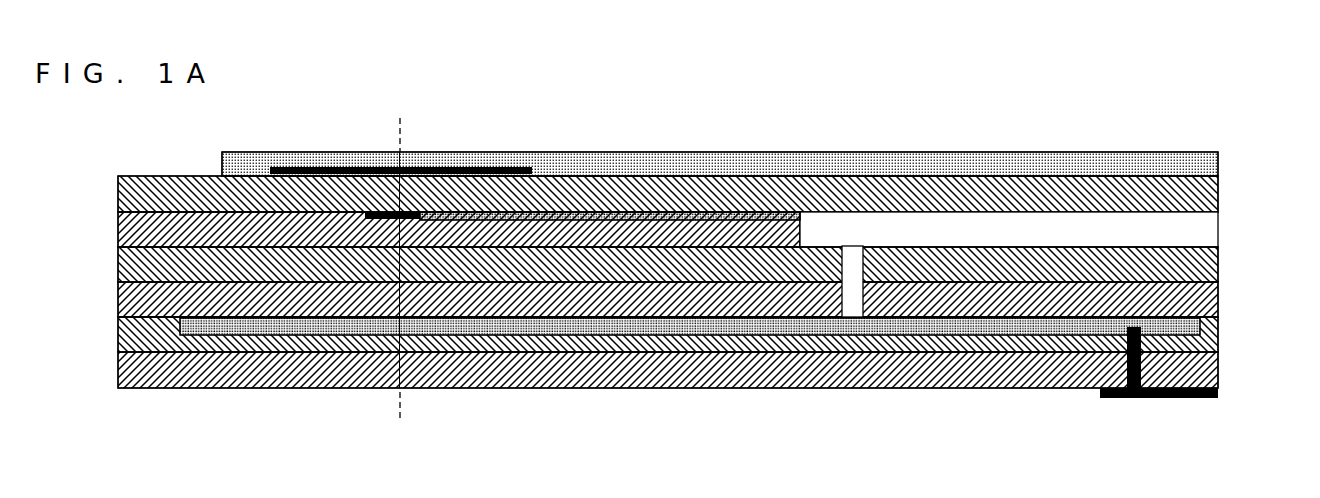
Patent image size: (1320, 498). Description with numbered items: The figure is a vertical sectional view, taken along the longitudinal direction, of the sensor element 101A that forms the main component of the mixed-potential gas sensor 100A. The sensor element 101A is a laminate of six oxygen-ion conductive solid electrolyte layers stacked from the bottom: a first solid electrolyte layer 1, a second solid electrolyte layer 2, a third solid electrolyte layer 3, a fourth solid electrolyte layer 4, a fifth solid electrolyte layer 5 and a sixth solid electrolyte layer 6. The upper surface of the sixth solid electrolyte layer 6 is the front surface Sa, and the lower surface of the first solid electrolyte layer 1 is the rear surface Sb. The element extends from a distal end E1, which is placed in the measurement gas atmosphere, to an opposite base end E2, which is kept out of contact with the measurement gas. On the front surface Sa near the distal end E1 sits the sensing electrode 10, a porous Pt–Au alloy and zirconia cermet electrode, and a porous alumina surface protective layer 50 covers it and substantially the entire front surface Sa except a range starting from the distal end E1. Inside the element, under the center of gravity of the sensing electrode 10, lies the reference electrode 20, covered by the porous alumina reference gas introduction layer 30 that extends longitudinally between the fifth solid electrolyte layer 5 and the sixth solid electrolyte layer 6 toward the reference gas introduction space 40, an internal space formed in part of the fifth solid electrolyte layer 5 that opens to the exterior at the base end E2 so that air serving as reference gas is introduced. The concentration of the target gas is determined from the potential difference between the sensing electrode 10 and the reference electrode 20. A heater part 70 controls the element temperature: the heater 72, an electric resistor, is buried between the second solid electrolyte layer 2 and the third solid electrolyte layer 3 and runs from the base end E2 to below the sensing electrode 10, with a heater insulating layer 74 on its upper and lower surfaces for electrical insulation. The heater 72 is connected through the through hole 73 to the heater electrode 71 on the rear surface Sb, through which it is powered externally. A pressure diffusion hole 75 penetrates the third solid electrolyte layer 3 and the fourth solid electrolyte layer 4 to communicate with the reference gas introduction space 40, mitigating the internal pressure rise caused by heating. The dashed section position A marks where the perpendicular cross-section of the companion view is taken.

The gas sensor 100A is at (1106, 128).
The sensor element 101A is at (183, 176).
The first solid electrolyte layer 1 is at (1218, 375).
The second solid electrolyte layer 2 is at (1218, 343).
The third solid electrolyte layer 3 is at (1218, 298).
The fourth solid electrolyte layer 4 is at (1218, 263).
The fifth solid electrolyte layer 5 is at (118, 230).
The sixth solid electrolyte layer 6 is at (1218, 195).
The sensing electrode 10 is at (508, 167).
The reference electrode 20 is at (410, 211).
The reference gas introduction layer 30 is at (645, 212).
The reference gas introduction space 40 is at (1208, 229).
The surface protective layer 50 is at (750, 165).
The heater part 70 is at (993, 340).
The heater electrode 71 is at (1190, 400).
The heater 72 is at (250, 335).
The through hole 73 is at (1113, 372).
The heater insulating layer 74 is at (197, 335).
The pressure diffusion hole 75 is at (851, 258).
The front surface Sa is at (129, 169).
The rear surface Sb is at (131, 398).
The distal end E1 is at (111, 284).
The base end E2 is at (1257, 278).
The position A-A' A is at (401, 267).